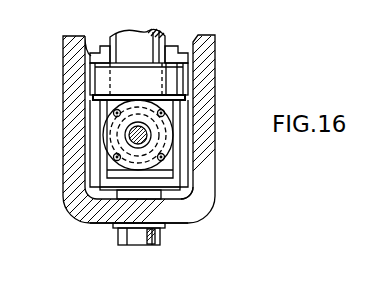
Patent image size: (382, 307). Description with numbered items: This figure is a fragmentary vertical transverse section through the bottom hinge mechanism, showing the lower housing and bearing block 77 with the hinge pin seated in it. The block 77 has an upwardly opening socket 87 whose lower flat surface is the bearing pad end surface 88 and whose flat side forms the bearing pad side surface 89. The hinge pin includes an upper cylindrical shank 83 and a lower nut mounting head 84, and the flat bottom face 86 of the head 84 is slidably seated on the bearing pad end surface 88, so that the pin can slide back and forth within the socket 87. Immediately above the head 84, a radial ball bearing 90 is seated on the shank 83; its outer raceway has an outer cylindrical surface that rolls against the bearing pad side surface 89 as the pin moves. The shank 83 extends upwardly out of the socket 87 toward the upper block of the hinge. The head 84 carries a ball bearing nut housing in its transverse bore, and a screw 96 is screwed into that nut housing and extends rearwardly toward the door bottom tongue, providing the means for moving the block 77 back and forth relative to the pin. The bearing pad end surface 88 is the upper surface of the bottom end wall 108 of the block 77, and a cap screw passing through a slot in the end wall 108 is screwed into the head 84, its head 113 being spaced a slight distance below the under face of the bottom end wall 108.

The lower housing and bearing block 77 is at (72, 218).
The upper cylindrical shank 83 is at (153, 35).
The lower nut mounting head 84 is at (110, 172).
The bottom face 86 is at (198, 192).
The upwardly opening socket 87 is at (93, 109).
The bearing pad end surface 88 is at (177, 221).
The bearing pad side surface 89 is at (90, 79).
The radial ball bearing 90 is at (180, 77).
The screw 96 is at (150, 133).
The bottom end wall 108 is at (123, 197).
The head 113 is at (152, 246).